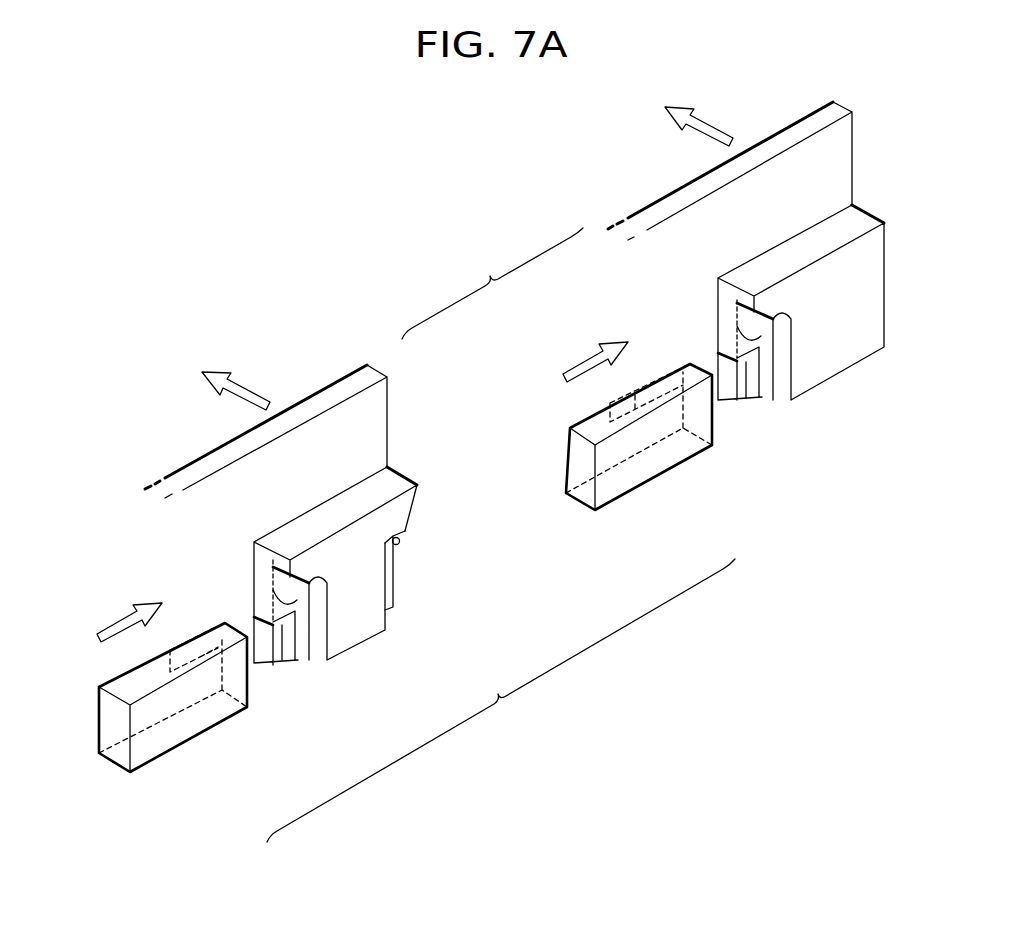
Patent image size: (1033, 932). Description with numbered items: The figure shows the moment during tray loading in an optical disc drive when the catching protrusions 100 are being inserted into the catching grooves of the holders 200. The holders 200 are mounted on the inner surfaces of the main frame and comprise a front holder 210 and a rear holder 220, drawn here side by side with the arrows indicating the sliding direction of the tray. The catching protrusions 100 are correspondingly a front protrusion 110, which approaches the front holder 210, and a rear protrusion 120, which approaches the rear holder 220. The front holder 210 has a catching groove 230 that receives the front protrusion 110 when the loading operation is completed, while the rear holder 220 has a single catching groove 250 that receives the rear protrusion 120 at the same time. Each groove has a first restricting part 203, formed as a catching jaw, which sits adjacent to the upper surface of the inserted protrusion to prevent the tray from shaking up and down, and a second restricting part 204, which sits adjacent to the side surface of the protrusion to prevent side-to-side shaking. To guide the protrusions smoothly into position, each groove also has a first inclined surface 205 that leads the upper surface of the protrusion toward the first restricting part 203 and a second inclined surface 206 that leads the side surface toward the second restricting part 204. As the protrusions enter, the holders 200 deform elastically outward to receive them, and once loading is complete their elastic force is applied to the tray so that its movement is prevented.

The catching protrusion 100 is at (501, 700).
The front protrusion 110 is at (168, 737).
The rear protrusion 120 is at (633, 477).
The holder 200 is at (492, 283).
The front holder 210 is at (410, 458).
The rear holder 220 is at (712, 306).
The first restricting part 203 is at (403, 536).
The second restricting part 204 is at (283, 604).
The first inclined surface 205 is at (280, 580).
The second inclined surface 206 is at (288, 653).
The catching groove 230 is at (304, 650).
The catching groove 250 is at (770, 388).